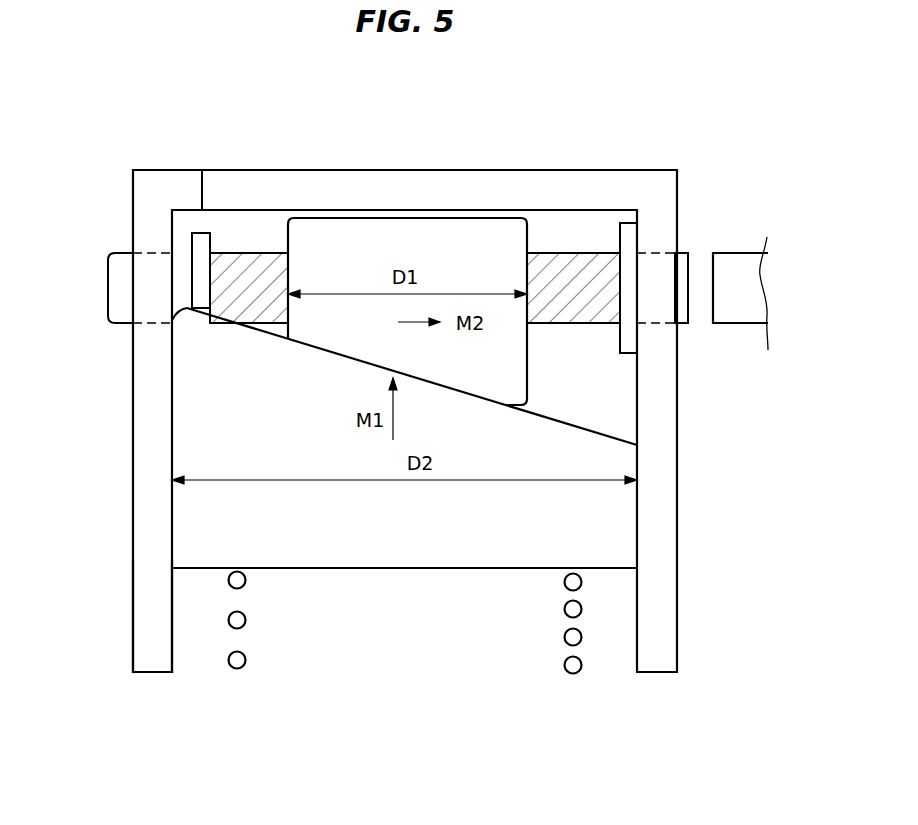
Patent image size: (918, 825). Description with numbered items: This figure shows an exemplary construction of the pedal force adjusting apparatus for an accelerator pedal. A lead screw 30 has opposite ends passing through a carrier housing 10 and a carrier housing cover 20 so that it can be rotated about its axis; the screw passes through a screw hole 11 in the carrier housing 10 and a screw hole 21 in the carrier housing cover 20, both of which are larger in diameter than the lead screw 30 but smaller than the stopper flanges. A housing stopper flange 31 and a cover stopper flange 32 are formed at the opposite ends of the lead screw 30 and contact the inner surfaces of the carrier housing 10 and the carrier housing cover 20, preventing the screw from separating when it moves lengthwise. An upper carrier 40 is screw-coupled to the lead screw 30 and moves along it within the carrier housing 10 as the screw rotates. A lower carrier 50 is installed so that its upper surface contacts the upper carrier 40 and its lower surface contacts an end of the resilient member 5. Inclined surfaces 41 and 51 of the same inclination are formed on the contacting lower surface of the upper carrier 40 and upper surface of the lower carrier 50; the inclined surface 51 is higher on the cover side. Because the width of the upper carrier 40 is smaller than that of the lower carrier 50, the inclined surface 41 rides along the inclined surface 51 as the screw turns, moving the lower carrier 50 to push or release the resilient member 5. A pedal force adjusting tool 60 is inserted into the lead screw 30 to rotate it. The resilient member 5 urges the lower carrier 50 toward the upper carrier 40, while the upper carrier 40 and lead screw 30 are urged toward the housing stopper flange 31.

The resilient member 5 is at (237, 669).
The carrier housing 10 is at (502, 182).
The screw hole 11 is at (655, 253).
The carrier housing cover 20 is at (148, 631).
The screw hole 21 is at (152, 243).
The lead screw 30 is at (247, 262).
The housing stopper flange 31 is at (628, 232).
The cover stopper flange 32 is at (202, 240).
The upper carrier 40 is at (403, 235).
The inclined surface 41 is at (428, 382).
The lower carrier 50 is at (418, 568).
The inclined surface 51 is at (607, 444).
The pedal force adjusting tool 60 is at (738, 262).